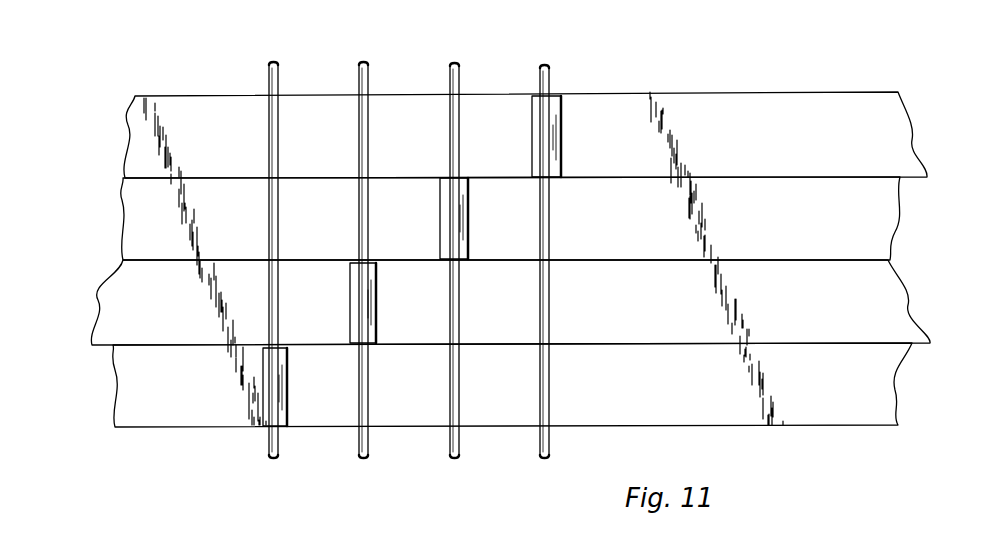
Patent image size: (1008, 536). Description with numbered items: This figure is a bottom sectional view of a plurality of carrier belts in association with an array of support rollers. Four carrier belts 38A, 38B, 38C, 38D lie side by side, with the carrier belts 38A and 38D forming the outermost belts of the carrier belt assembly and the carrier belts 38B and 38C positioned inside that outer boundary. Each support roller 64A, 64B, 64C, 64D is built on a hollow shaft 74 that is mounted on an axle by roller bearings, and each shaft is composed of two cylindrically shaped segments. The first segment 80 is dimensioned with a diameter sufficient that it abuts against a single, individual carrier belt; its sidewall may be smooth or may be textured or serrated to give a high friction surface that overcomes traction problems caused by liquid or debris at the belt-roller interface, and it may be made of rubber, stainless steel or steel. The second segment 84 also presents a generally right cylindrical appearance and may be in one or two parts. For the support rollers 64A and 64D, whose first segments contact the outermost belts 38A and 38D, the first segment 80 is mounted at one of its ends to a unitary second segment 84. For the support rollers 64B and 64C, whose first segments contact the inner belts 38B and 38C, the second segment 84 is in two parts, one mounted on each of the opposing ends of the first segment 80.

The carrier belt 38A is at (797, 143).
The carrier belt 38B is at (803, 229).
The carrier belt 38C is at (805, 309).
The carrier belt 38D is at (808, 392).
The support roller 64A is at (562, 140).
The support roller 64B is at (468, 232).
The support roller 64C is at (350, 314).
The support roller 64D is at (278, 410).
The hollow shaft 74 is at (362, 60).
The first segment 80 is at (532, 125).
The second segment 84 is at (552, 80).